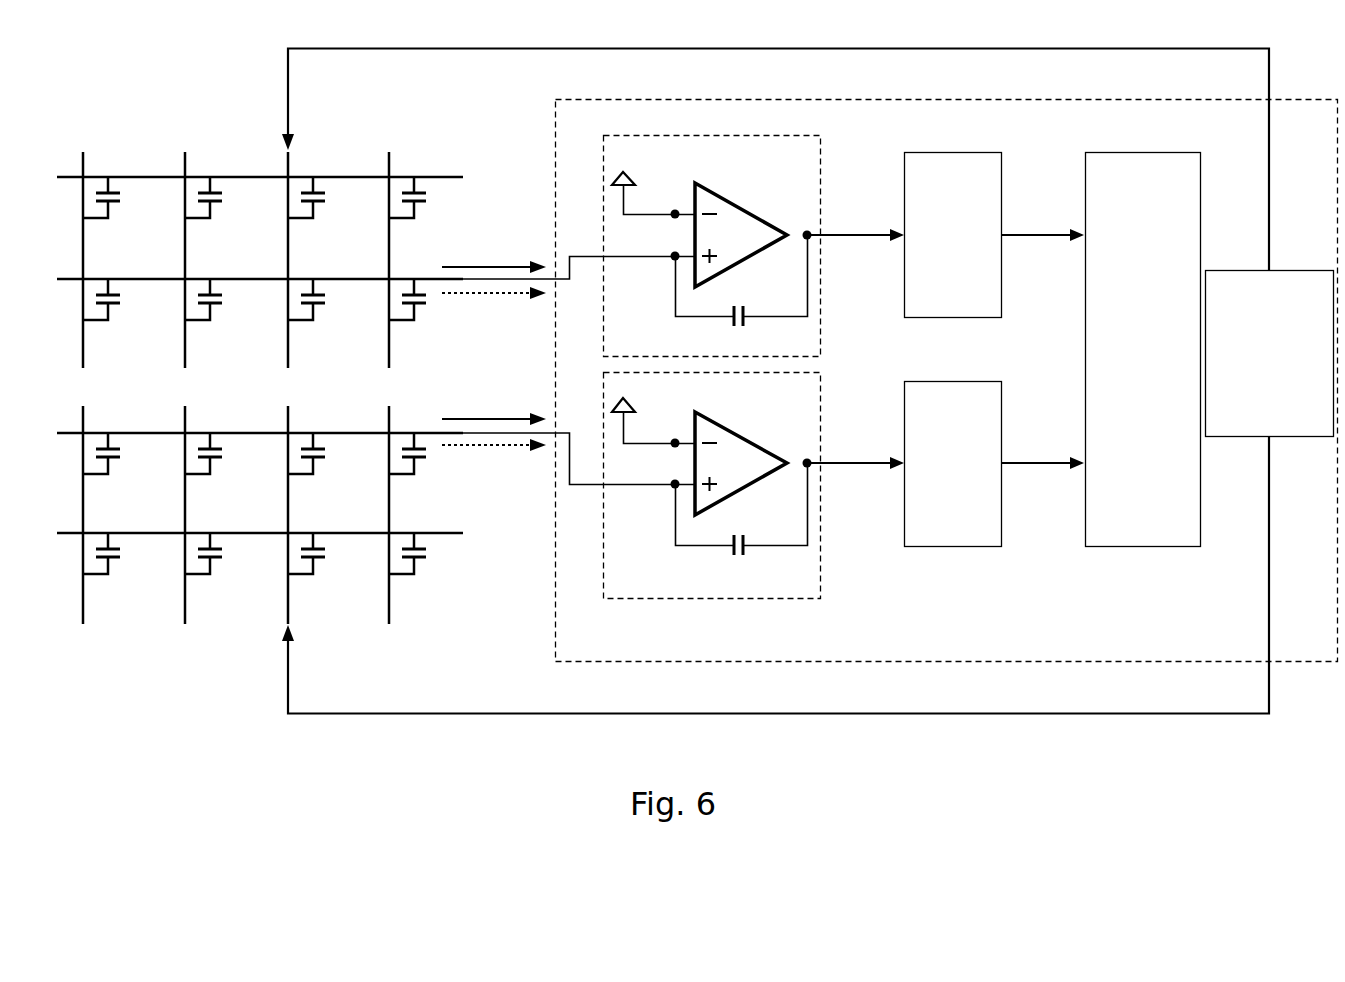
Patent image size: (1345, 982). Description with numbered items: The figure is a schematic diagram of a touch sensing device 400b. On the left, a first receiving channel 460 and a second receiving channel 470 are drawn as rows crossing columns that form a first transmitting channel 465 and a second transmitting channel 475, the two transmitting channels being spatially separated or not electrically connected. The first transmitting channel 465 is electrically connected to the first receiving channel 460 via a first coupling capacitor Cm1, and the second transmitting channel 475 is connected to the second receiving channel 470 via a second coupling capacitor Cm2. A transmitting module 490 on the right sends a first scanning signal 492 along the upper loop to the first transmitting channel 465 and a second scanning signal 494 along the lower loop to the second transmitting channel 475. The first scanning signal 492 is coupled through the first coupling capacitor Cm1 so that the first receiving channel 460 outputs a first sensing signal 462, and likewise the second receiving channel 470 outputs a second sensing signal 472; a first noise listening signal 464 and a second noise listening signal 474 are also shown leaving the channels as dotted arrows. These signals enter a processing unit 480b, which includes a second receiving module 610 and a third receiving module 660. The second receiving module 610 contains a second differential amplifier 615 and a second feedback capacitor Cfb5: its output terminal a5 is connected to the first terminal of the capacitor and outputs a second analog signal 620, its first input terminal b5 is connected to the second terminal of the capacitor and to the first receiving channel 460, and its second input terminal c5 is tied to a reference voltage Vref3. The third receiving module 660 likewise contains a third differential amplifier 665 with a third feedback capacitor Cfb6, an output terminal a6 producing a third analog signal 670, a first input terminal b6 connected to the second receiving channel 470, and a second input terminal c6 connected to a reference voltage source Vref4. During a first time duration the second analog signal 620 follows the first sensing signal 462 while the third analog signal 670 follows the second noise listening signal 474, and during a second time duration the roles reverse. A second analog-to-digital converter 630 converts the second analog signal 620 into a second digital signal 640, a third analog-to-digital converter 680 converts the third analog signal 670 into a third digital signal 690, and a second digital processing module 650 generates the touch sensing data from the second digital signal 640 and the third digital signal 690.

The touch sensing device 400b is at (228, 88).
The first receiving channel 460 is at (248, 266).
The second receiving channel 470 is at (248, 508).
The first transmitting channel 465 is at (288, 352).
The second transmitting channel 475 is at (288, 606).
The first sensing signal 462 is at (460, 267).
The first noise listening signal 464 is at (460, 293).
The second sensing signal 472 is at (460, 419).
The second noise listening signal 474 is at (460, 445).
The first scanning signal 492 is at (503, 49).
The second scanning signal 494 is at (508, 713).
The processing unit 480b is at (925, 99).
The second receiving module 610 is at (755, 135).
The second differential amplifier 615 is at (723, 196).
The second analog signal 620 is at (832, 235).
The second analog-to-digital converter 630 is at (935, 300).
The second digital signal 640 is at (1015, 235).
The second digital processing module 650 is at (1125, 414).
The third receiving module 660 is at (757, 598).
The third differential amplifier 665 is at (723, 424).
The third analog signal 670 is at (832, 463).
The third analog-to-digital converter 680 is at (935, 528).
The third digital signal 690 is at (1015, 463).
The transmitting module 490 is at (1251, 392).
The first coupling capacitor Cm1 is at (334, 299).
The second coupling capacitor Cm2 is at (334, 453).
The second feedback capacitor Cfb5 is at (742, 293).
The third feedback capacitor Cfb6 is at (742, 521).
The reference voltage Vref3 is at (637, 181).
The reference voltage source Vref4 is at (637, 409).
The second input terminal c5 is at (664, 203).
The first input terminal b5 is at (661, 269).
The output terminal a5 is at (803, 223).
The second input terminal c6 is at (664, 432).
The first input terminal b6 is at (661, 497).
The output terminal a6 is at (803, 451).